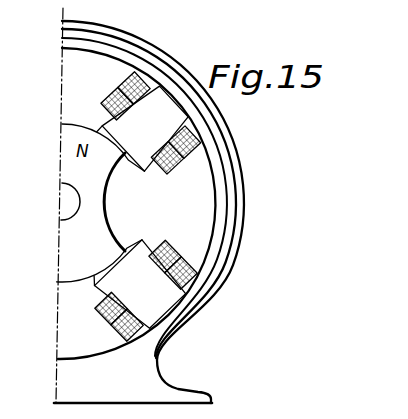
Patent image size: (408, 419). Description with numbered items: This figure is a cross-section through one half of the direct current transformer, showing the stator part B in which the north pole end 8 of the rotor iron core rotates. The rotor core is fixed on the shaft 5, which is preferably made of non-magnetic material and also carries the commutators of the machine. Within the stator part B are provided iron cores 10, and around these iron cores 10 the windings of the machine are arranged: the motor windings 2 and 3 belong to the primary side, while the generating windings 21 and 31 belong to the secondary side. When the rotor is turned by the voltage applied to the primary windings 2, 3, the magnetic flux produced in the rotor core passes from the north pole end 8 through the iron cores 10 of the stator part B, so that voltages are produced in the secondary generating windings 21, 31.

The stator part B is at (151, 205).
The shaft 5 is at (61, 193).
The north pole end of iron core 8 is at (98, 173).
The motor winding 2 is at (192, 164).
The generating winding 21 is at (206, 142).
The motor winding 3 is at (172, 243).
The generating winding 31 is at (204, 263).
The iron core 10 is at (172, 112).